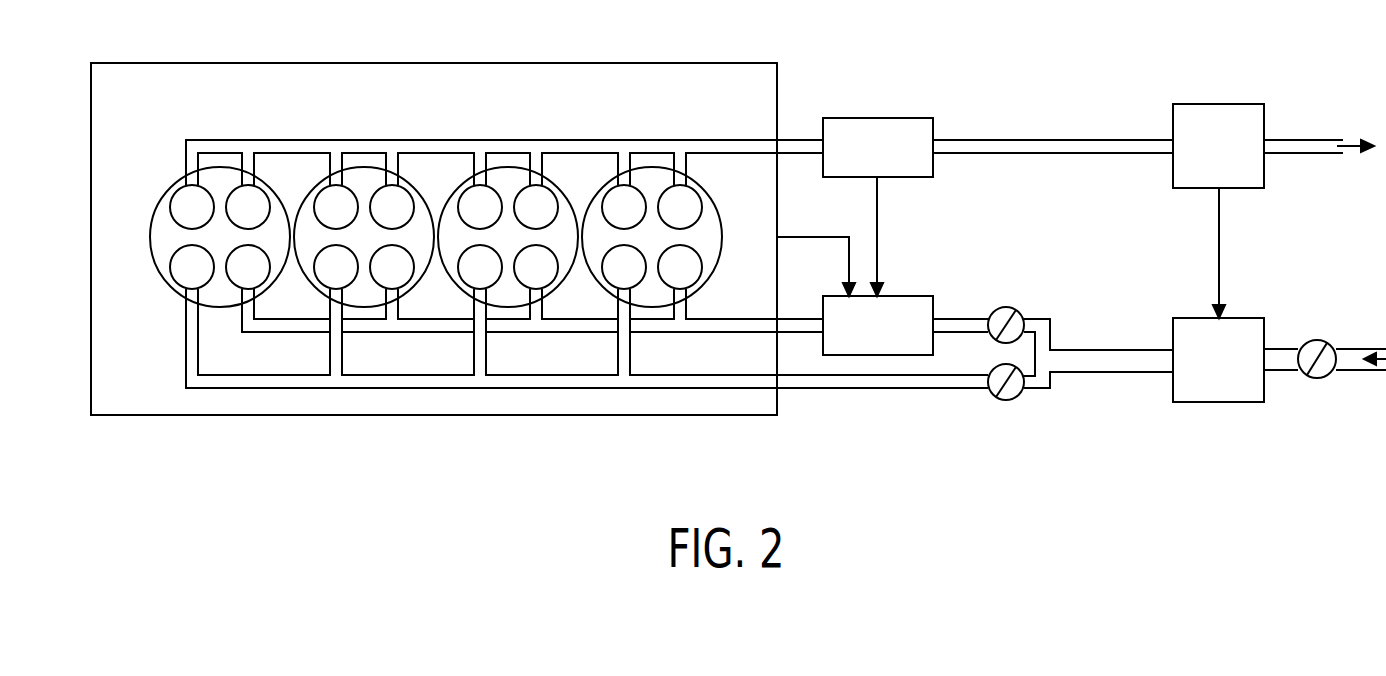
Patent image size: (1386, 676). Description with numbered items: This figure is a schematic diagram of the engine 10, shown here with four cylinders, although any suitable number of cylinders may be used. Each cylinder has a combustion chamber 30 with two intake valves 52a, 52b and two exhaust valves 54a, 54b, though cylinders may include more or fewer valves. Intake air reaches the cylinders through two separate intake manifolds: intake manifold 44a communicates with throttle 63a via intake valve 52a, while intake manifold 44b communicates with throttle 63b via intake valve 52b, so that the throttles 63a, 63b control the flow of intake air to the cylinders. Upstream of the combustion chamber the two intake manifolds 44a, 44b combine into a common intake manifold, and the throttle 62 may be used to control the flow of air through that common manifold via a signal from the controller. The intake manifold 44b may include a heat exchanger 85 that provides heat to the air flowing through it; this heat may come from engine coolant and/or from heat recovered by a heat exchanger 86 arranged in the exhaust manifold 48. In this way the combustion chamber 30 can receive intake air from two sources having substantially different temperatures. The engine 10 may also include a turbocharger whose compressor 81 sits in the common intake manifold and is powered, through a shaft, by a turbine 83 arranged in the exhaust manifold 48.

The engine 10 is at (413, 107).
The combustion chamber 30 is at (167, 243).
The exhaust valve 54a is at (183, 200).
The exhaust valve 54b is at (227, 194).
The intake valve 52a is at (182, 267).
The intake valve 52b is at (243, 273).
The exhaust manifold 48 is at (725, 138).
The intake manifold 44a is at (723, 380).
The intake manifold 44b is at (742, 322).
The heat exchanger 86 is at (867, 164).
The heat exchanger 85 is at (867, 341).
The turbine 83 is at (1207, 161).
The compressor 81 is at (1207, 375).
The throttle 63a is at (1005, 400).
The throttle 63b is at (1003, 307).
The throttle 62 is at (1317, 378).